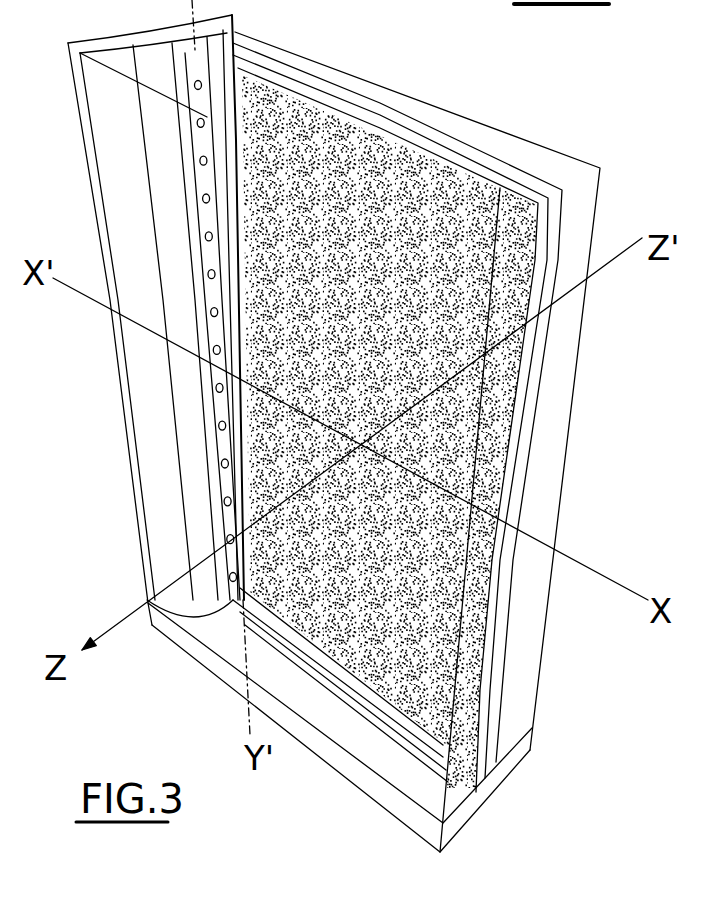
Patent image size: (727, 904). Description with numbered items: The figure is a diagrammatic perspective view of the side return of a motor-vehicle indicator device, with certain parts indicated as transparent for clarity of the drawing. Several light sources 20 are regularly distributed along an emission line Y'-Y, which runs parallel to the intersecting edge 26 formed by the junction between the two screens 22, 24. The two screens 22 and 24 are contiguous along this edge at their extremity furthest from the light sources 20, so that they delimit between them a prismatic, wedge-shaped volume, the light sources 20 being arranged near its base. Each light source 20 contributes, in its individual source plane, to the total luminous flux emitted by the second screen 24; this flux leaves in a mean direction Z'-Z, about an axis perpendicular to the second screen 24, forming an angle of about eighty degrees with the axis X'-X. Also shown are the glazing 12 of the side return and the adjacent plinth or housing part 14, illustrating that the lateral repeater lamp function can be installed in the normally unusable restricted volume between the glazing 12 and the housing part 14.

The glazing 12 is at (469, 220).
The plinth or housing part 14 is at (597, 210).
The light source 20 is at (205, 280).
The first screen 22 is at (327, 87).
The second screen 24 is at (419, 143).
The intersecting edge 26 is at (540, 363).